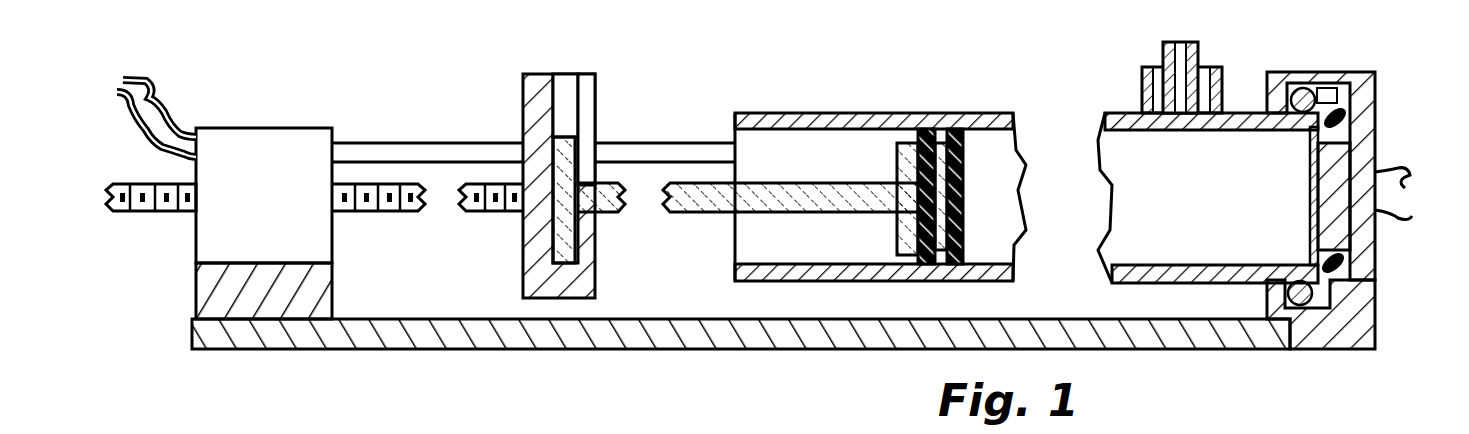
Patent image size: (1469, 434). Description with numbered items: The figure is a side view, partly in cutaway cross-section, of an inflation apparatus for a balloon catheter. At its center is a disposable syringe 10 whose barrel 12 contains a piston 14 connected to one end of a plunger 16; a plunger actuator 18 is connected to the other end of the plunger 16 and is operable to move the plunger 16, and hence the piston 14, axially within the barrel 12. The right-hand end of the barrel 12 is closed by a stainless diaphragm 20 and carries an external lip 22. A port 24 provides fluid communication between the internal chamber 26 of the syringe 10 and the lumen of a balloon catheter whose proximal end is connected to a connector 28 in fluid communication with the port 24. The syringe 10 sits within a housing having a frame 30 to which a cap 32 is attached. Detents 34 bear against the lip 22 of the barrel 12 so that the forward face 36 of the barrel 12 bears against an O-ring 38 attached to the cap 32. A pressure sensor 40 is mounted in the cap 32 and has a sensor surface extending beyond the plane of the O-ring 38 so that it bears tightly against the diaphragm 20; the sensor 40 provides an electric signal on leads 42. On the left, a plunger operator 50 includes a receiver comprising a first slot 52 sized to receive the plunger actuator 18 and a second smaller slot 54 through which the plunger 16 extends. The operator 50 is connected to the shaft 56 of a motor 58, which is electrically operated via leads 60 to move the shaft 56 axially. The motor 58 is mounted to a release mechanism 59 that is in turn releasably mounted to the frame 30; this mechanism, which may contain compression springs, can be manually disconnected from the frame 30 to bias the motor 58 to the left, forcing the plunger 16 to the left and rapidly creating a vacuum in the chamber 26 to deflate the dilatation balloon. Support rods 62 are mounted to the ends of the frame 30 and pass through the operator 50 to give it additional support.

The disposable syringe 10 is at (795, 108).
The barrel 12 is at (993, 112).
The piston 14 is at (963, 185).
The plunger 16 is at (670, 212).
The plunger actuator 18 is at (580, 150).
The stainless diaphragm 20 is at (1310, 196).
The external lip 22 is at (1372, 340).
The port 24 is at (1180, 128).
The internal chamber 26 is at (1190, 238).
The connector 28 is at (1195, 55).
The frame 30 is at (1186, 349).
The cap 32 is at (1322, 349).
The detents 34 is at (1318, 72).
The forward face 36 is at (1355, 78).
The O-ring 38 is at (1345, 115).
The pressure sensor 40 is at (1355, 165).
The leads 42 is at (1405, 190).
The plunger operator 50 is at (523, 95).
The first slot 52 is at (563, 105).
The second smaller slot 54 is at (585, 88).
The shaft 56 is at (150, 211).
The motor 58 is at (252, 128).
The release mechanism 59 is at (196, 300).
The leads 60 is at (123, 80).
The support rods 62 is at (425, 143).